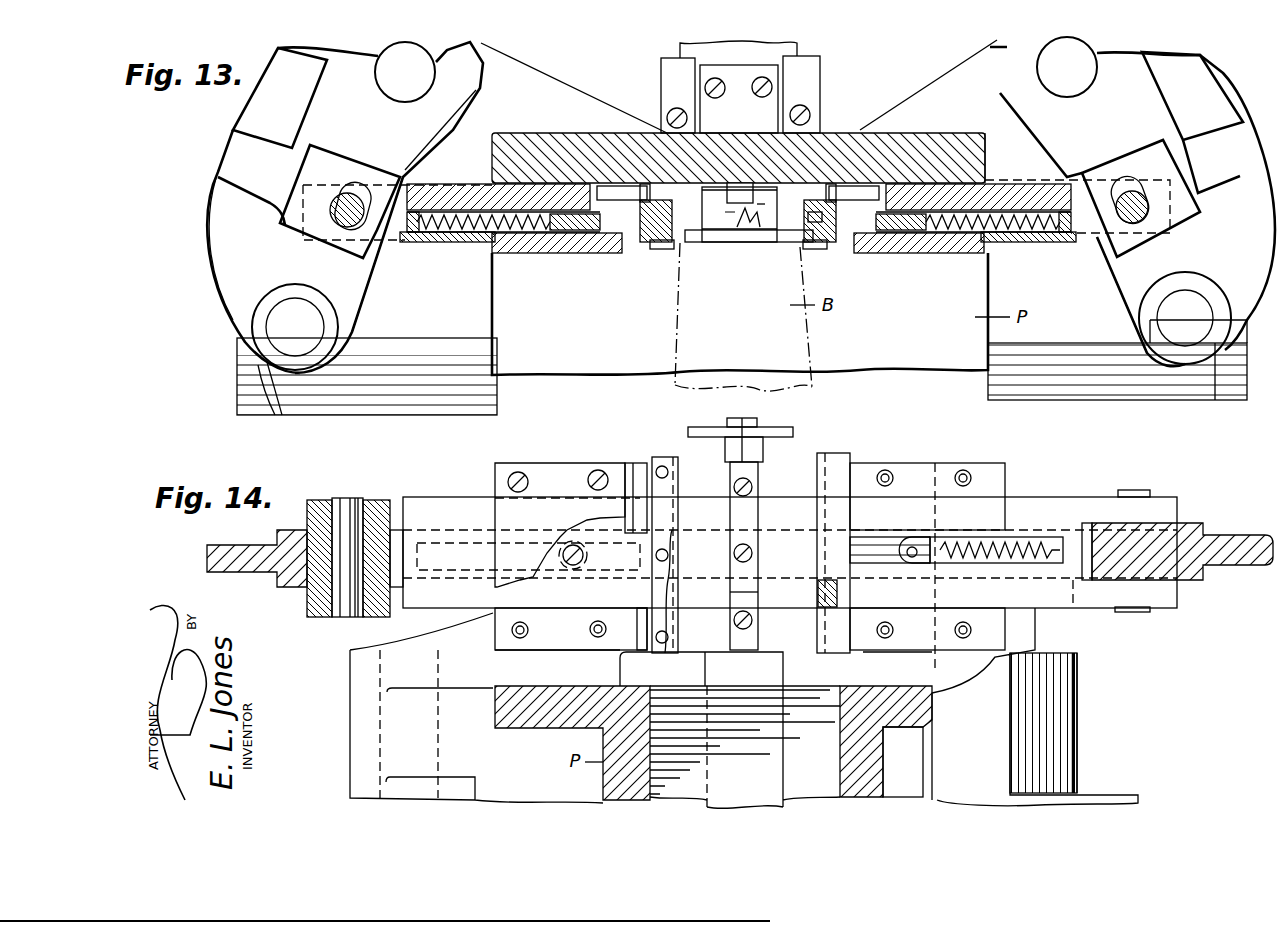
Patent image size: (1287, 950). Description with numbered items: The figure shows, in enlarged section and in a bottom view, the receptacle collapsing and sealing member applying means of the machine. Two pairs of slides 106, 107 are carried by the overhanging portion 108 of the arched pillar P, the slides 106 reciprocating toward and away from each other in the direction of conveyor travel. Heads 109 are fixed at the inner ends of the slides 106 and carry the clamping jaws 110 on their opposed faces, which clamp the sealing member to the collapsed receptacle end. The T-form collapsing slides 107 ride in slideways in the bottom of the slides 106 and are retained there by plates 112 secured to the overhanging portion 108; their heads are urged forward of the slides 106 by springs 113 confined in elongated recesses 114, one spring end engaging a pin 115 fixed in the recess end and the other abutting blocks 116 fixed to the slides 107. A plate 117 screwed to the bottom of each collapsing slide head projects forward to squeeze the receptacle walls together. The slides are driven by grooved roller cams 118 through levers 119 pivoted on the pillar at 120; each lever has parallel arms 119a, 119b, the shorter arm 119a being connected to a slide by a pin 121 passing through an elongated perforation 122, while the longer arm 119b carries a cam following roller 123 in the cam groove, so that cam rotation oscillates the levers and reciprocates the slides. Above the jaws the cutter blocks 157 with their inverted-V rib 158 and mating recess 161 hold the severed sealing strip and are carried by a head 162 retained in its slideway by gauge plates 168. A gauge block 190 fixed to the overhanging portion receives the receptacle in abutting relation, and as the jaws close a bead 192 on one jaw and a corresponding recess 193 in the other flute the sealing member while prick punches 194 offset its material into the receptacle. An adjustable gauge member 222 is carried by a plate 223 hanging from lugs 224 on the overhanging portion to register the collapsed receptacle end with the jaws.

In FIG. 13, the slides 106 is at (462, 186).
In FIG. 14, the slides 106 is at (443, 512).
In FIG. 13, the receptacle collapsing slides 107 is at (450, 242).
In FIG. 14, the receptacle collapsing slides 107 is at (590, 555).
In FIG. 13, the overhanging portion 108 is at (950, 140).
In FIG. 14, the overhanging portion 108 is at (767, 556).
In FIG. 13, the heads 109 is at (620, 182).
In FIG. 14, the heads 109 is at (640, 462).
In FIG. 13, the jaw 110 is at (650, 242).
In FIG. 14, the jaw 110 is at (648, 458).
In FIG. 14, the plates 112 is at (545, 472).
In FIG. 13, the springs 113 is at (508, 254).
In FIG. 14, the springs 113 is at (1005, 545).
In FIG. 13, the elongated recesses 114 is at (472, 205).
In FIG. 14, the elongated recesses 114 is at (1030, 545).
In FIG. 13, the pin 115 is at (412, 233).
In FIG. 13, the blocks 116 is at (556, 240).
In FIG. 14, the blocks 116 is at (914, 547).
In FIG. 13, the plate 117 is at (662, 249).
In FIG. 14, the plate 117 is at (670, 530).
In FIG. 13, the cams 118 is at (414, 410).
In FIG. 13, the levers 119 is at (1244, 168).
In FIG. 13, the lever arms 119a is at (1170, 95).
In FIG. 14, the lever arms 119a is at (1190, 582).
In FIG. 13, the lever arms 119b is at (214, 246).
In FIG. 13, the pivotal support 120 is at (736, 69).
In FIG. 14, the pivotal support 120 is at (378, 738).
In FIG. 13, the pin 121 is at (345, 222).
In FIG. 14, the pin 121 is at (342, 608).
In FIG. 13, the elongated perforation 122 is at (350, 192).
In FIG. 13, the cam following rollers 123 is at (1184, 340).
In FIG. 13, the cutter block 157 is at (714, 242).
In FIG. 13, the rib 158 is at (744, 230).
In FIG. 13, the recess 161 is at (769, 200).
In FIG. 13, the head 162 is at (798, 50).
In FIG. 13, the gauge plates 168 is at (674, 77).
In FIG. 13, the gauge block 190 is at (738, 184).
In FIG. 14, the gauge block 190 is at (760, 593).
In FIG. 13, the bead 192 is at (664, 220).
In FIG. 13, the recess 193 is at (812, 218).
In FIG. 13, the prick punches 194 is at (814, 215).
In FIG. 14, the prick punches 194 is at (818, 582).
In FIG. 14, the gauge member 222 is at (748, 424).
In FIG. 14, the plate 223 is at (793, 428).
In FIG. 14, the lugs 224 is at (685, 437).